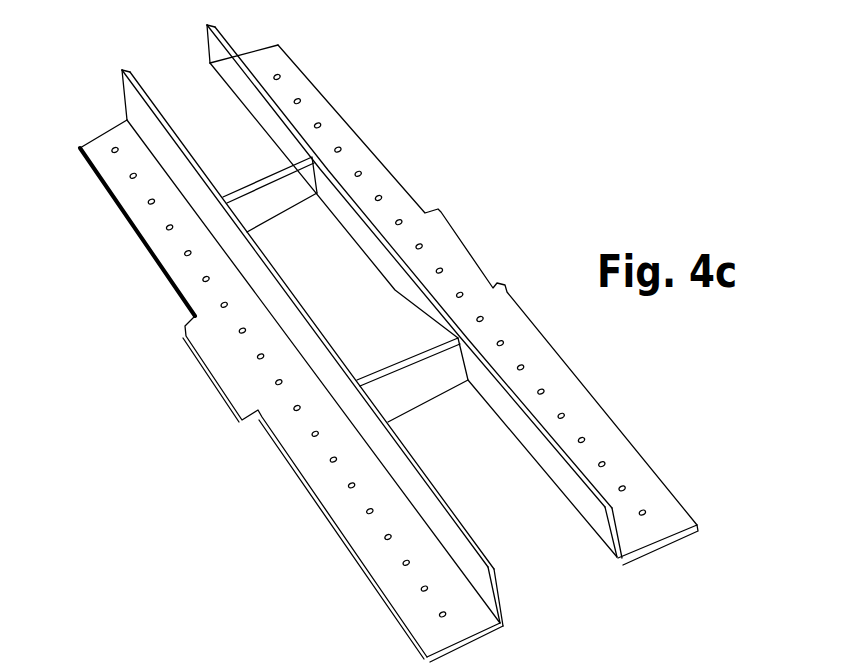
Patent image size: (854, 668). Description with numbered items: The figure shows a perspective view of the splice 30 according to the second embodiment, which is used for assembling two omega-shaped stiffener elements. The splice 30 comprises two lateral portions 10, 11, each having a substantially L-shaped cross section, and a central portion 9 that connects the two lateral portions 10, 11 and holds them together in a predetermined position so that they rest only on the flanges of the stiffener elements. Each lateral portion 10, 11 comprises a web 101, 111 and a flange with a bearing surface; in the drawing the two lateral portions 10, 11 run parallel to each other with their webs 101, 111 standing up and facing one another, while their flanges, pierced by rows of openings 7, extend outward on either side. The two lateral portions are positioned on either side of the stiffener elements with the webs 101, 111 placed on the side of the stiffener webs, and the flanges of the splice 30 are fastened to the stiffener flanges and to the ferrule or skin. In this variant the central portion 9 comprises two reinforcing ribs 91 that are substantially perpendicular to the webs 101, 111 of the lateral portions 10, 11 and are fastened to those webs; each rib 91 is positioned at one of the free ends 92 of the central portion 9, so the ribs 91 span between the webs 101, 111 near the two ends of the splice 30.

The splice 30 is at (503, 154).
The lateral portion 10 is at (498, 624).
The lateral portion 11 is at (618, 565).
The web 101 is at (450, 538).
The web 111 is at (540, 447).
The hole 7 is at (378, 333).
The central portion 9 is at (318, 302).
The reinforcing rib 91 is at (273, 190).
The free end 92 is at (297, 208).